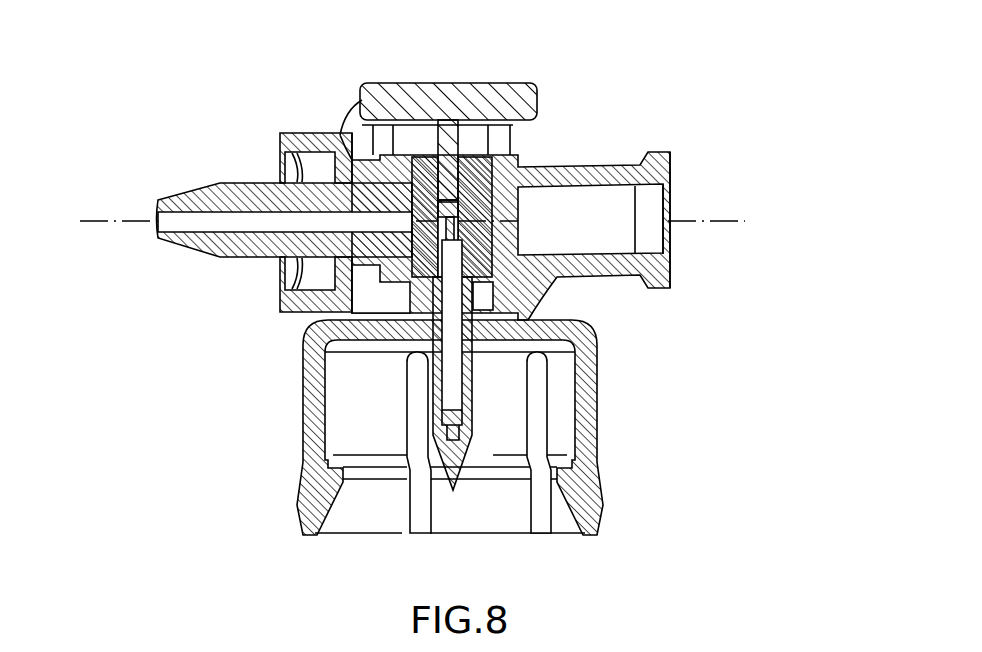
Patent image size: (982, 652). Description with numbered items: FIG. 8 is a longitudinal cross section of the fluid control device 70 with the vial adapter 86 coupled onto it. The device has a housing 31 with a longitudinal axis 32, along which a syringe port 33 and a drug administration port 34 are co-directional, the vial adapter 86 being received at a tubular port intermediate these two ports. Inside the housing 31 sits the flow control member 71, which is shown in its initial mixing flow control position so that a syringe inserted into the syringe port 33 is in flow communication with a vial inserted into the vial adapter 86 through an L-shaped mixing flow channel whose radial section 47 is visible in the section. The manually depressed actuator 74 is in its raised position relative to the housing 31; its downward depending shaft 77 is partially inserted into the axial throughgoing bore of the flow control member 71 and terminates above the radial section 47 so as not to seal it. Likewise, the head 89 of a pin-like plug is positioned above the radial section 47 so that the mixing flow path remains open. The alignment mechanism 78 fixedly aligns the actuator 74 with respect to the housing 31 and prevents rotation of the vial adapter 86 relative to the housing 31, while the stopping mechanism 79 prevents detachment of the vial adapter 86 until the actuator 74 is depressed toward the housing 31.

The fluid control device 70 is at (684, 50).
The stopping mechanism 79 is at (179, 137).
The drug administration port 34 is at (219, 191).
The head 89 is at (357, 216).
The flow control member 71 is at (417, 151).
The manually depressed actuator 74 is at (472, 83).
The shaft 77 is at (528, 130).
The alignment mechanism 78 is at (548, 145).
The housing 31 is at (598, 151).
The syringe port 33 is at (616, 153).
The longitudinal axis 32 is at (742, 213).
The radial section 47 is at (515, 224).
The vial adapter 86 is at (598, 378).